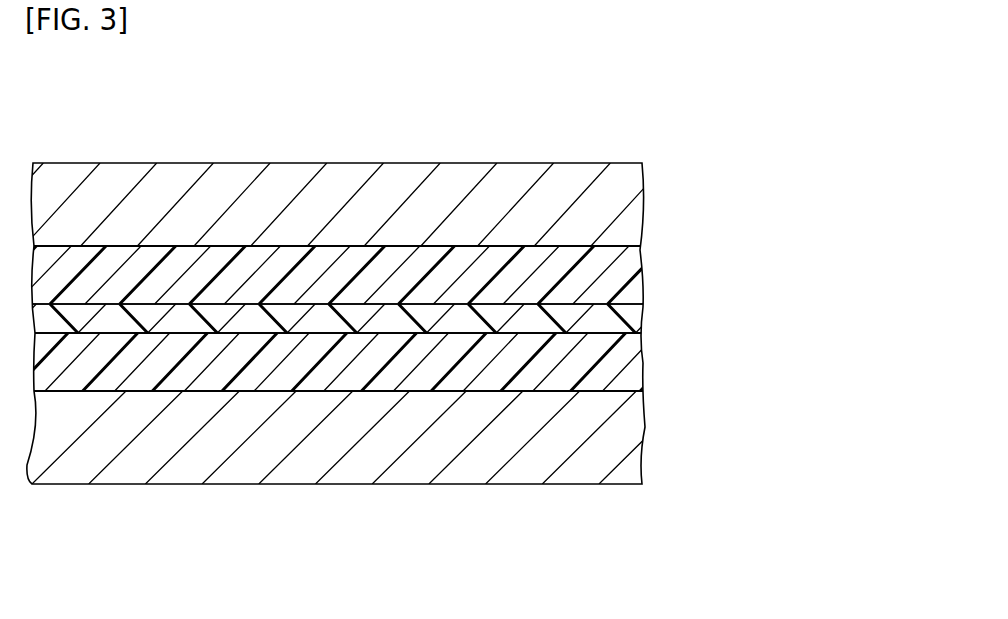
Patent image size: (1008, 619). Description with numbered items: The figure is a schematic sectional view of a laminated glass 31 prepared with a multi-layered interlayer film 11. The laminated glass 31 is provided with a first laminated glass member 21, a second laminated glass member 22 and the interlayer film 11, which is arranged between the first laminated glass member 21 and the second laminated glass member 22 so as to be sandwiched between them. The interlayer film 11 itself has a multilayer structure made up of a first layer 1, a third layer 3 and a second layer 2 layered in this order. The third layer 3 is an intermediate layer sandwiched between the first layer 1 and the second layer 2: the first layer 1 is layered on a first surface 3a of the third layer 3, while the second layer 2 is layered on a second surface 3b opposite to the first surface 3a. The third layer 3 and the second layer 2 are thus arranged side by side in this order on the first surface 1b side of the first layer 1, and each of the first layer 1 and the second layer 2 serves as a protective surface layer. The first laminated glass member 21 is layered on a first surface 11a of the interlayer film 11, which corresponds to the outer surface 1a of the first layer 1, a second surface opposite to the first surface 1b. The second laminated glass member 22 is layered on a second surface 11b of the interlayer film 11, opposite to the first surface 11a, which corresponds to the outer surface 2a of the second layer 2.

The laminated glass 31 is at (165, 128).
The second laminated glass member 22 is at (643, 198).
The second layer 2 is at (647, 275).
The third layer 3 is at (647, 320).
The first layer 1 is at (647, 363).
The first laminated glass member 21 is at (643, 423).
The interlayer film 11 is at (258, 245).
The second surface of the interlayer film 11b is at (350, 245).
The first surface of the interlayer film 11a is at (350, 390).
The outer surface of the second layer 2a is at (565, 245).
The second surface of the third layer 3b is at (438, 303).
The first surface of the third layer 3a is at (438, 333).
The first surface of the first layer 1b is at (627, 303).
The outer surface of the first layer 1a is at (558, 390).